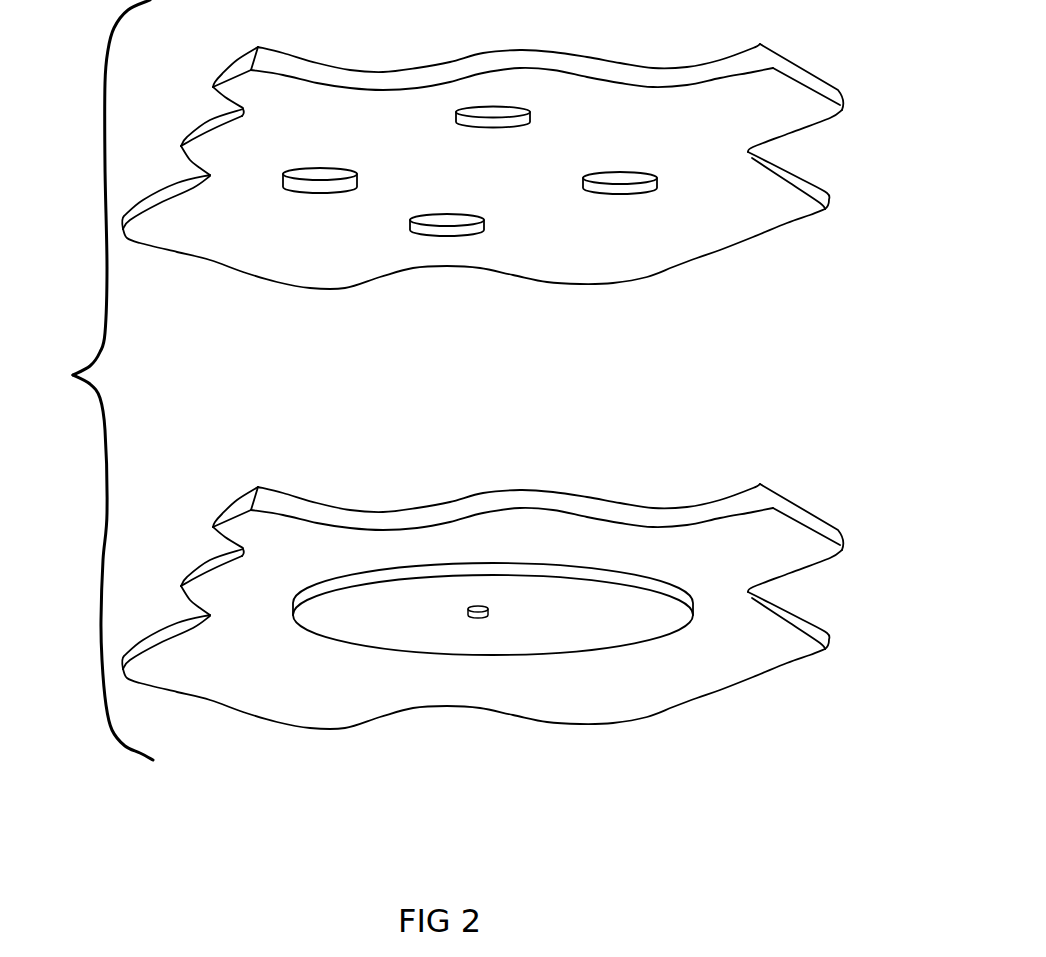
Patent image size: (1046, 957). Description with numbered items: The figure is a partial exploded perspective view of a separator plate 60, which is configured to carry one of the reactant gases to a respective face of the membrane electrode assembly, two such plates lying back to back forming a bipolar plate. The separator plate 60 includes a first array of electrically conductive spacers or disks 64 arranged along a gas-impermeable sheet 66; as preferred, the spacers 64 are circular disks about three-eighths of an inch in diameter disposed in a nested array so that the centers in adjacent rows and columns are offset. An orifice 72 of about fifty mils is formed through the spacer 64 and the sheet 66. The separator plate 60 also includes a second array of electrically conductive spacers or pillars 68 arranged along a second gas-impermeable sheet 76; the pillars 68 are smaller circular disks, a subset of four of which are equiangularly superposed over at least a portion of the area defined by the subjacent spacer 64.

The separator plate 60 is at (91, 380).
The gas-impermeable sheet 76 is at (608, 68).
The pillars 68 is at (478, 110).
The gas-impermeable sheet 66 is at (627, 517).
The spacers 64 is at (578, 625).
The orifice 72 is at (468, 612).